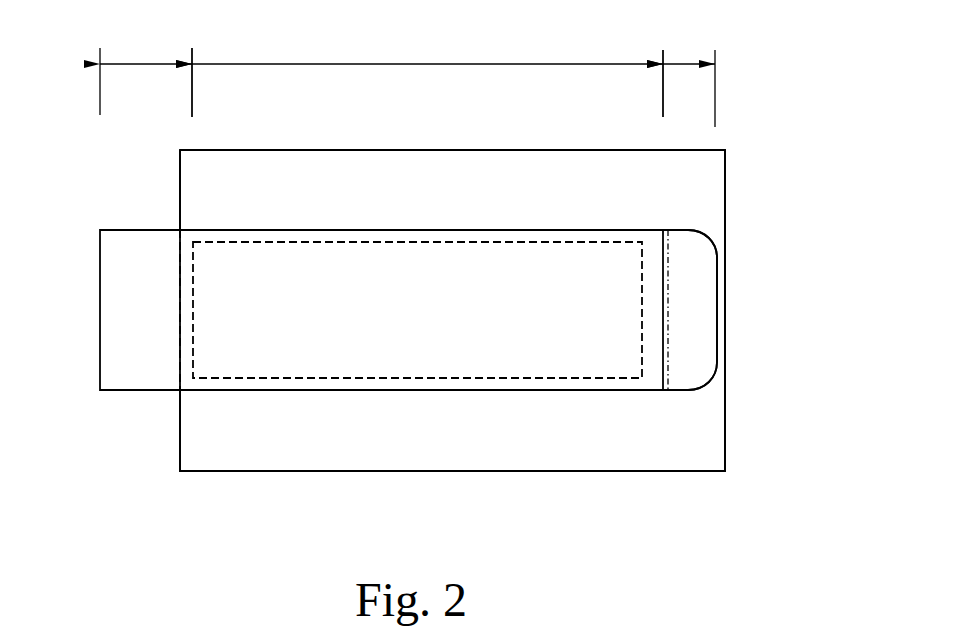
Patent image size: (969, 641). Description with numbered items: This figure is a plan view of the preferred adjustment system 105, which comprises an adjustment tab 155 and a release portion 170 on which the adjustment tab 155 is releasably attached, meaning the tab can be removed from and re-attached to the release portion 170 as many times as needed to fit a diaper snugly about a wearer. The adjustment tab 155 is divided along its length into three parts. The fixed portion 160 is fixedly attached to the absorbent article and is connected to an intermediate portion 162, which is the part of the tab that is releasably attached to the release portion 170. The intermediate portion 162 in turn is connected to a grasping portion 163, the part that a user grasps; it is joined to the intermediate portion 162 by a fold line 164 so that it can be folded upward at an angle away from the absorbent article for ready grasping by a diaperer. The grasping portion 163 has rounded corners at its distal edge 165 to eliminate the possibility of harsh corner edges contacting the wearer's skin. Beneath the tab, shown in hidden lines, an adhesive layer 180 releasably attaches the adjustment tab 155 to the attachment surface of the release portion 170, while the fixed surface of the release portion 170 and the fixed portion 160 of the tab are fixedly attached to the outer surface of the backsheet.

The adjustment system 105 is at (750, 147).
The adjustment tab 155 is at (360, 238).
The fixed portion 160 is at (148, 63).
The intermediate portion 162 is at (427, 63).
The grasping portion 163 is at (688, 63).
The fold line 164 is at (665, 280).
The distal edge 165 is at (717, 345).
The release portion 170 is at (530, 455).
The adhesive layer 180 is at (278, 362).